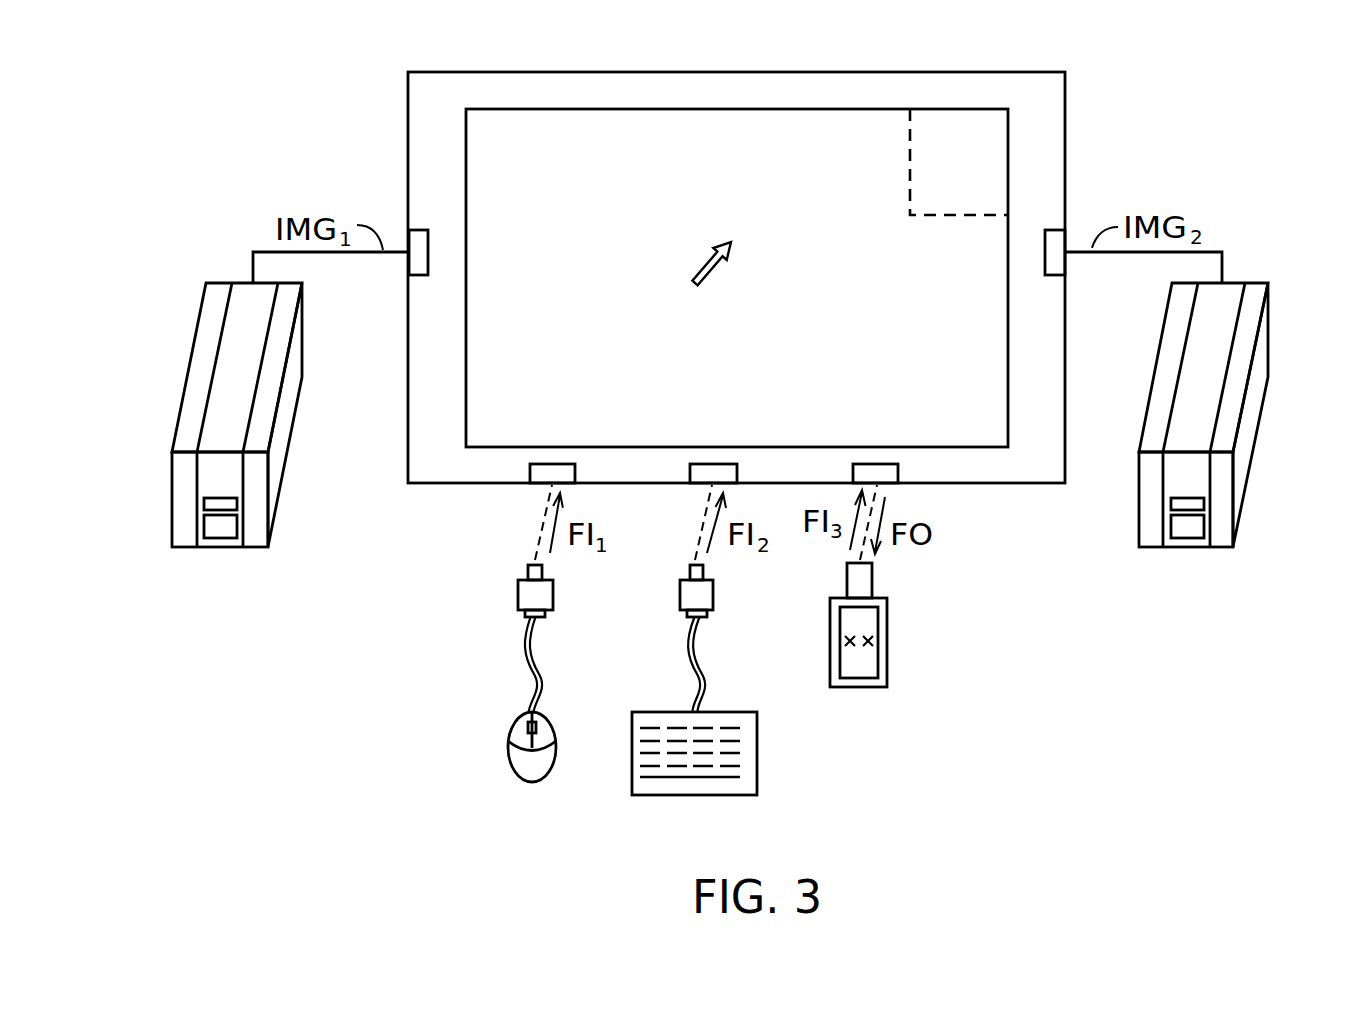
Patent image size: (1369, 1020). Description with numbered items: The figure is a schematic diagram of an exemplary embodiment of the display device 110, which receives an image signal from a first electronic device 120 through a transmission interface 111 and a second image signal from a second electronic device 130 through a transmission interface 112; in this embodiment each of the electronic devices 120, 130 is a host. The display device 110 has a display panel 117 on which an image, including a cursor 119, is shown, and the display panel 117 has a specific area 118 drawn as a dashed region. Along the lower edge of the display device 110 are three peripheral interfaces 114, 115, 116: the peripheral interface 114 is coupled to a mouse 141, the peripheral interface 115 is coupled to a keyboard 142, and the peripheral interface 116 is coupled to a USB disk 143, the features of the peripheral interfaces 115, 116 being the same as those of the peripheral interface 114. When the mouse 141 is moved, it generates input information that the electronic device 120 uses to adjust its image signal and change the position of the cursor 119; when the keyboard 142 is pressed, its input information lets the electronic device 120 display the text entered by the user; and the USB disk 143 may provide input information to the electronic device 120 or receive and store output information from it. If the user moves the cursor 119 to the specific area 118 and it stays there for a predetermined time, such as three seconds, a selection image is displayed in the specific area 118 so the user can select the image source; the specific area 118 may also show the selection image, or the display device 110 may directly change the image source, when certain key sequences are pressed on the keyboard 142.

The display device 110 is at (503, 70).
The transmission interface 111 is at (413, 228).
The transmission interface 112 is at (1053, 230).
The peripheral interface 114 is at (530, 475).
The peripheral interface 115 is at (690, 474).
The peripheral interface 116 is at (900, 473).
The display panel 117 is at (735, 107).
The specific area 118 is at (910, 172).
The cursor 119 is at (720, 243).
The electronic device 120 is at (218, 277).
The electronic device 130 is at (1255, 278).
The mouse 141 is at (532, 782).
The keyboard 142 is at (695, 797).
The USB disk 143 is at (860, 688).